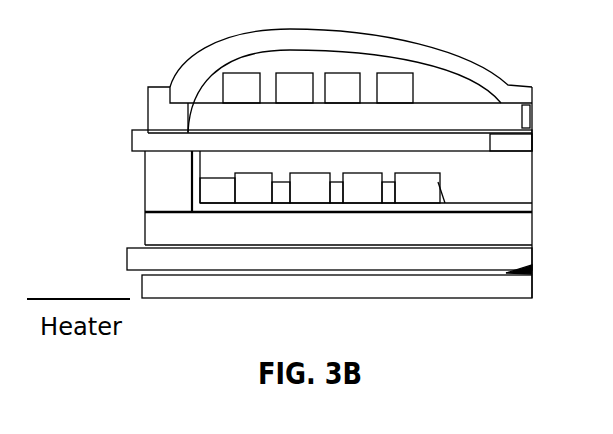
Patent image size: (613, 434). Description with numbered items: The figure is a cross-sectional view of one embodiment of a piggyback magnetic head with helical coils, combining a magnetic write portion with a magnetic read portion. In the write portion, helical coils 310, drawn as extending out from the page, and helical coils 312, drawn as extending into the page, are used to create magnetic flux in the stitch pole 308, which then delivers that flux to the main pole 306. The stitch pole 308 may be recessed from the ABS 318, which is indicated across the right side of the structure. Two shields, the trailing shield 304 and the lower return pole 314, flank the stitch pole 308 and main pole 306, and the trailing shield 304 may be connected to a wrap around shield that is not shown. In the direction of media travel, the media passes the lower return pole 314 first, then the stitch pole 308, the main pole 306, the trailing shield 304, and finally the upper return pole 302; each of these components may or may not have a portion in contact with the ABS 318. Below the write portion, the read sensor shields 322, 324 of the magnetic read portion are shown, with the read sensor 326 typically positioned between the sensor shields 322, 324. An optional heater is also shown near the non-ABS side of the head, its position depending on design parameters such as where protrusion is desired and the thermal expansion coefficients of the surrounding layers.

The upper return pole 302 is at (473, 58).
The trailing shield 304 is at (532, 117).
The main pole 306 is at (532, 140).
The stitch pole 308 is at (485, 151).
The helical coils 310 is at (223, 89).
The helical coils 312 is at (238, 171).
The lower return pole 314 is at (372, 238).
The ABS 318 is at (540, 218).
The read sensor shield 322 is at (128, 259).
The read sensor shield 324 is at (142, 287).
The read sensor 326 is at (522, 269).